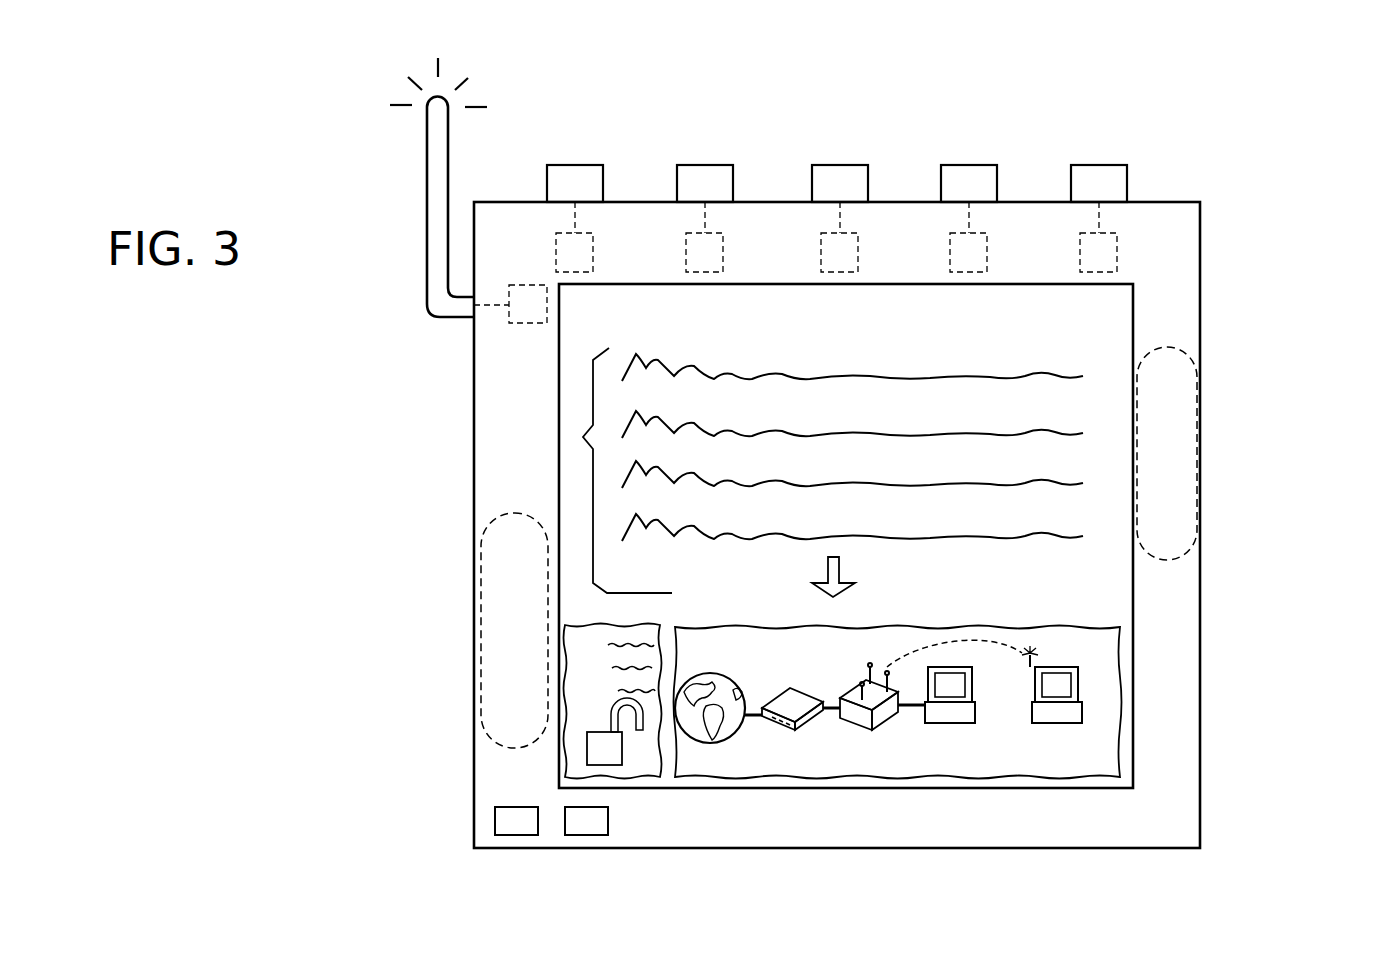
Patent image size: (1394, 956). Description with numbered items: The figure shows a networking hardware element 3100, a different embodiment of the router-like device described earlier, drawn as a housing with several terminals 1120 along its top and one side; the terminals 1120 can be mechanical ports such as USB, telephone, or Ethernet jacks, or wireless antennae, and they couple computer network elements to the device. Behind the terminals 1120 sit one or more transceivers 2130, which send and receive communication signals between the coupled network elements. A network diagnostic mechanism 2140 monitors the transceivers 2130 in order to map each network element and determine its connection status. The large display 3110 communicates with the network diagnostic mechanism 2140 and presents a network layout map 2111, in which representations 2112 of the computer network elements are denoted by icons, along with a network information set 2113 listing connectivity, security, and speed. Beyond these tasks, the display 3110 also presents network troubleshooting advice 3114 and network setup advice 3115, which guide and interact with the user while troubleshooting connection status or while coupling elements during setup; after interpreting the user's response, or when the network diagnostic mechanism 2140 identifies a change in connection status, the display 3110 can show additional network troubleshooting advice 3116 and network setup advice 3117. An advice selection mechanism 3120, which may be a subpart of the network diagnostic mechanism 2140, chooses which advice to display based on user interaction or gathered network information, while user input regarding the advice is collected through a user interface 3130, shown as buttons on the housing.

The terminals 1120 is at (437, 186).
The transceivers 2130 is at (1117, 245).
The networking hardware element 3100 is at (1355, 855).
The display 3110 is at (558, 480).
The network troubleshooting advice 3114 is at (583, 437).
The network setup advice 3115 is at (674, 421).
The additional network troubleshooting advice 3116 is at (674, 461).
The additional network setup advice 3117 is at (674, 502).
The advice selection mechanism 3120 is at (481, 673).
The network information set 2113 is at (567, 765).
The network layout map 2111 is at (1120, 740).
The representations of computer network elements 2112 is at (862, 725).
The network diagnostic mechanism 2140 is at (1170, 560).
The user interface 3130 is at (585, 822).